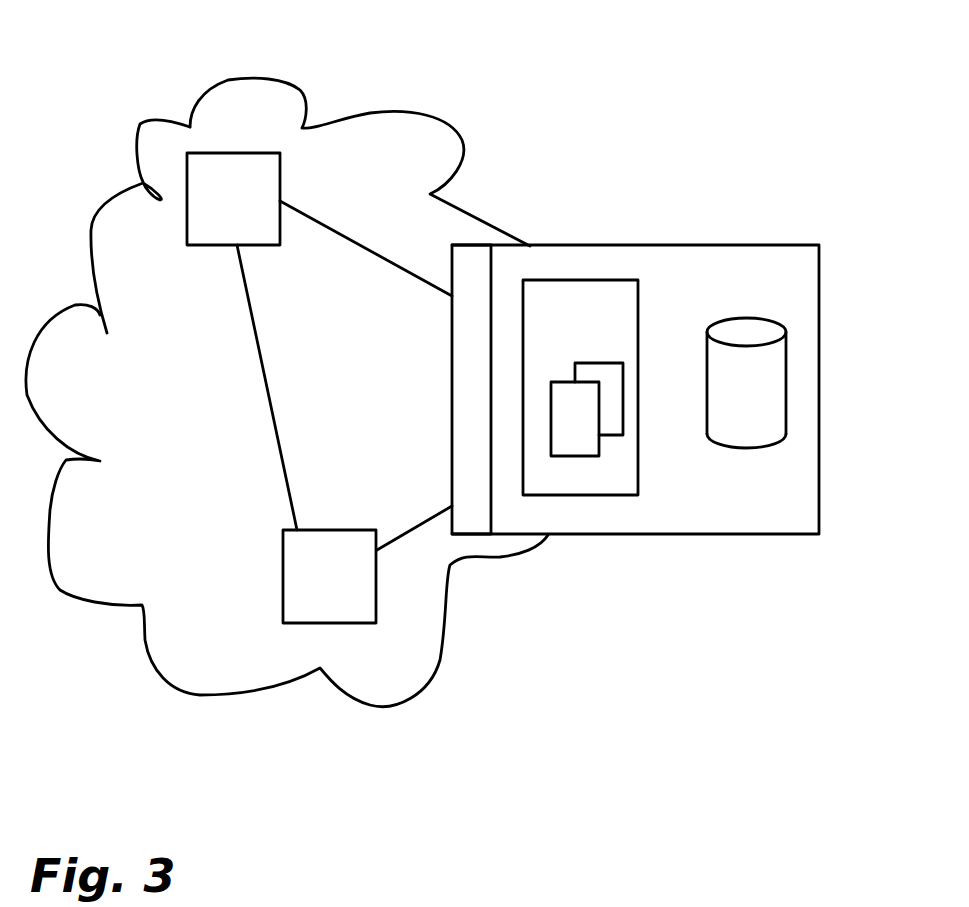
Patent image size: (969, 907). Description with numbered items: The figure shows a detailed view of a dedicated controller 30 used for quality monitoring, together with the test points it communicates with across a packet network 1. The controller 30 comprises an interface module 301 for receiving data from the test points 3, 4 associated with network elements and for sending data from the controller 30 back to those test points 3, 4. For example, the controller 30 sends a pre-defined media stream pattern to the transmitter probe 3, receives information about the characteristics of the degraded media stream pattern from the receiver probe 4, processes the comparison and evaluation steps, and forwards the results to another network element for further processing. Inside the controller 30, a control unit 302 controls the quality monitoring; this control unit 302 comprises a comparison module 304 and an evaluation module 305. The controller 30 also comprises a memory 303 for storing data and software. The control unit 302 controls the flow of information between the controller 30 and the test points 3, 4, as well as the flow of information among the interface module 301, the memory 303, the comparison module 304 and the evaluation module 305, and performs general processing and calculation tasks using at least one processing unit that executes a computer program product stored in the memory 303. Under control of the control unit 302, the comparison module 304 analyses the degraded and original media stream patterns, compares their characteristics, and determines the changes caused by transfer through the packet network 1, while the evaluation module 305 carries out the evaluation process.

The packet network 1 is at (193, 103).
The transmitter probe 3 is at (245, 153).
The receiver probe 4 is at (355, 608).
The controller 30 is at (820, 245).
The interface module 301 is at (470, 258).
The control unit 302 is at (598, 280).
The memory 303 is at (787, 395).
The comparison module 304 is at (584, 450).
The evaluation module 305 is at (614, 430).